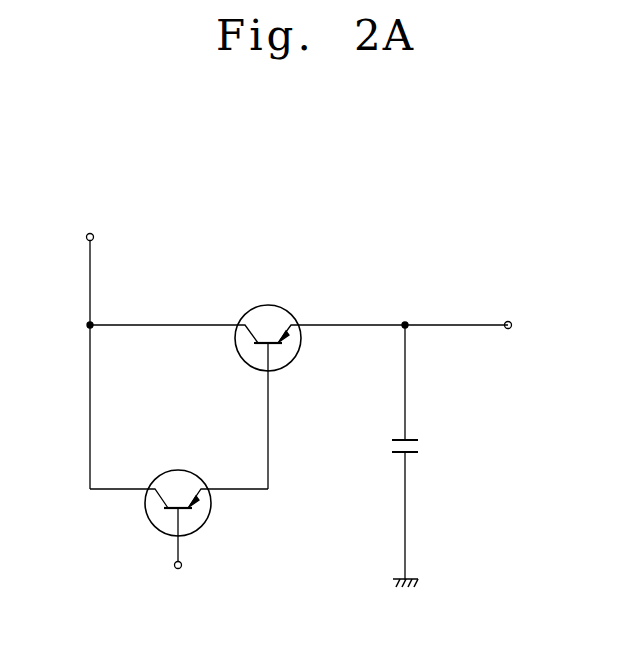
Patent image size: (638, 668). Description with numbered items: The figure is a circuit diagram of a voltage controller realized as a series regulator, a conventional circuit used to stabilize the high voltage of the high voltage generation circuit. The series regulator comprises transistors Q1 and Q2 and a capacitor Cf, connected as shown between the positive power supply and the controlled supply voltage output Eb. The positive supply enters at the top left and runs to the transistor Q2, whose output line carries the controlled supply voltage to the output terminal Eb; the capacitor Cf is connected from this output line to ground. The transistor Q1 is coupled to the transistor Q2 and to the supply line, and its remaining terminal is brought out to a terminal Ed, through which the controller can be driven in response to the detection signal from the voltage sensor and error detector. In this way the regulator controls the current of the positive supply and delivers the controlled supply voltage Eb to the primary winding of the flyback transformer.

The transistor Q1 is at (188, 495).
The transistor Q2 is at (275, 329).
The capacitor Cf is at (422, 446).
The controlled supply voltage output Eb is at (526, 325).
The drive voltage terminal Ed is at (179, 578).